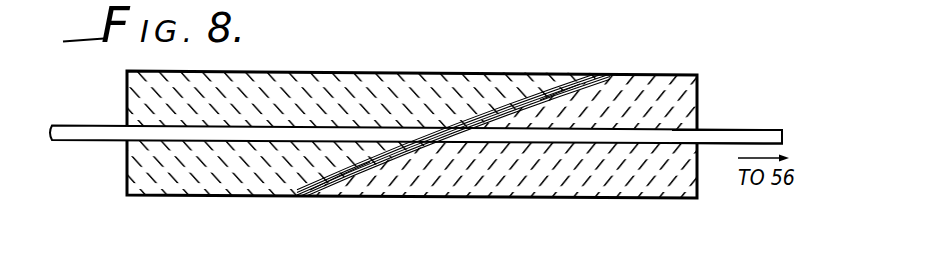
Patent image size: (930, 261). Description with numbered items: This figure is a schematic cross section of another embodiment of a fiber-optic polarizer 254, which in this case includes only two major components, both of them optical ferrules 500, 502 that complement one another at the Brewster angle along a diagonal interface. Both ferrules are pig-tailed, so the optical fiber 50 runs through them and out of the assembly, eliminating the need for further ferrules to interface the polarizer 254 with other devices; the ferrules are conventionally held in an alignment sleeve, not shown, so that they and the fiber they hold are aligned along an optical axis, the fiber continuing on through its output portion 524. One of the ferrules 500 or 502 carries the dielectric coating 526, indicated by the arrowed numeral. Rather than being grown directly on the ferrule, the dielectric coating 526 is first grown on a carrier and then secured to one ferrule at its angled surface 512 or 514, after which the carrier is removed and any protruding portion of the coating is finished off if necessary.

The optical fiber 50 is at (90, 125).
The optical ferrule 500 is at (205, 196).
The optical ferrule 502 is at (665, 73).
The surface 512 is at (522, 104).
The surface 514 is at (552, 88).
The fiber output segment 524 is at (672, 130).
The dielectric coating 526 is at (369, 182).
The polarizer 254 is at (421, 208).